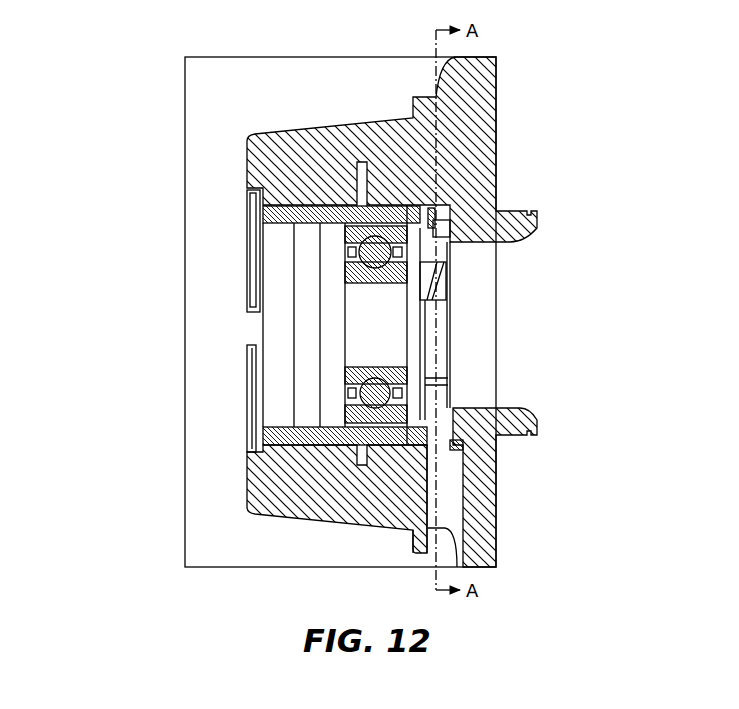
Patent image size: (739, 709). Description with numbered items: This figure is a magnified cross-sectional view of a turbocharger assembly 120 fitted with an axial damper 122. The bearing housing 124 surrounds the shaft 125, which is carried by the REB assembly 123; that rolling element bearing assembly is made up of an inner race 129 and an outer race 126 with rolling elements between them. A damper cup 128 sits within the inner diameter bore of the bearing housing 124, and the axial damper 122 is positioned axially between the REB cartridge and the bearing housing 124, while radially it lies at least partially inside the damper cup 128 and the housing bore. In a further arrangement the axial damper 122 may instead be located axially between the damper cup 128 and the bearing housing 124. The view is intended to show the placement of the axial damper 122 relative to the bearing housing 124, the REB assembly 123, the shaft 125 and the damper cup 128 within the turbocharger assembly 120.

The turbocharger assembly 120 is at (153, 55).
The axial damper 122 is at (447, 247).
The REB assembly 123 is at (341, 254).
The bearing housing 124 is at (485, 448).
The shaft 125 is at (355, 330).
The outer race 126 is at (436, 444).
The damper cup 128 is at (432, 457).
The inner race 129 is at (420, 266).